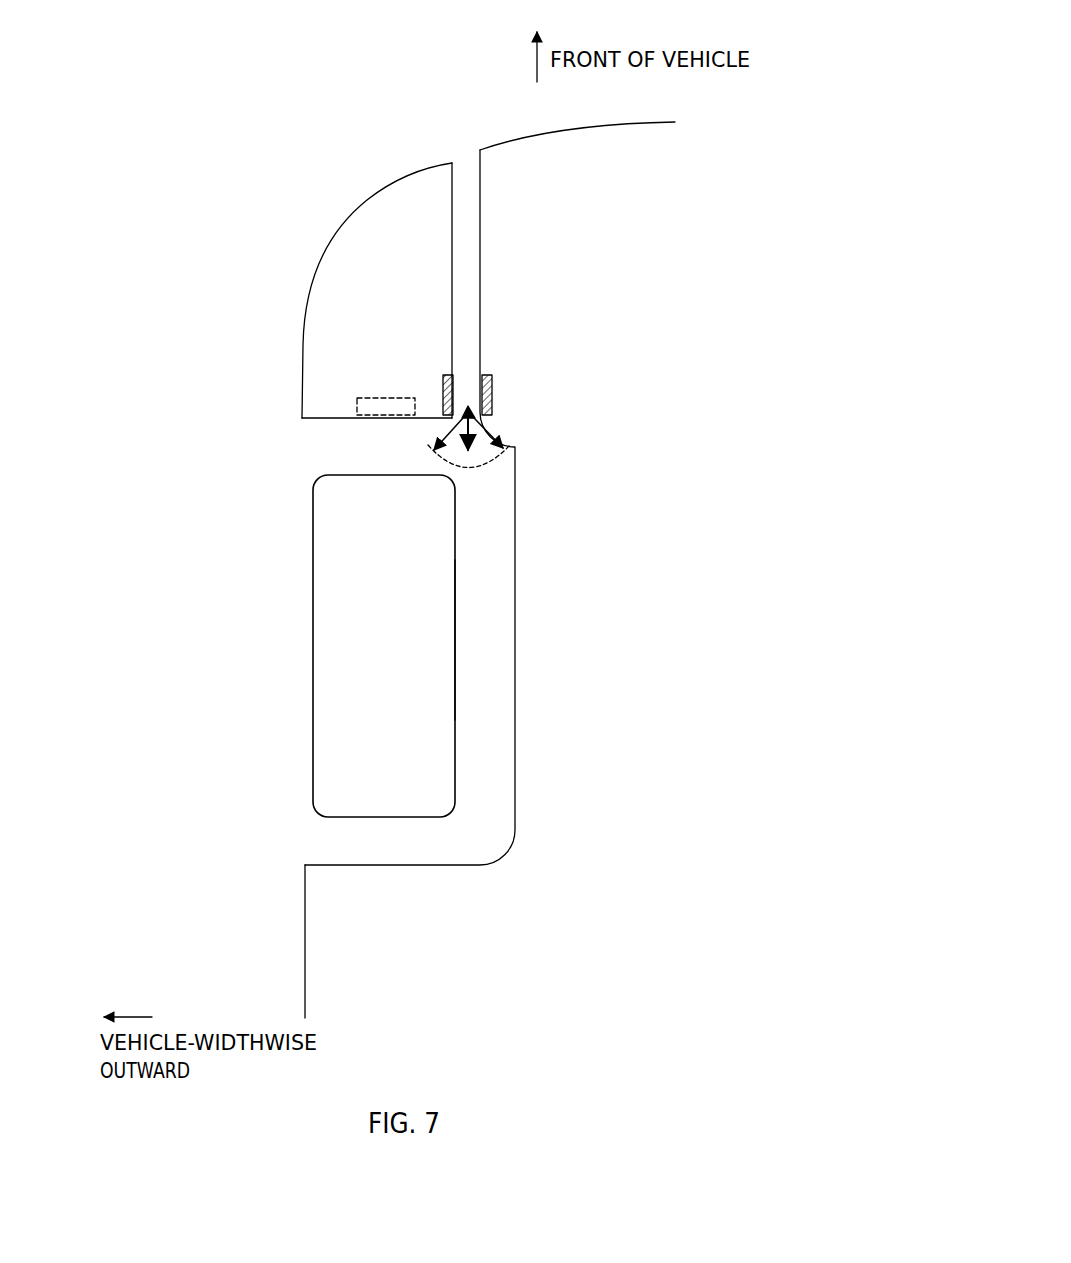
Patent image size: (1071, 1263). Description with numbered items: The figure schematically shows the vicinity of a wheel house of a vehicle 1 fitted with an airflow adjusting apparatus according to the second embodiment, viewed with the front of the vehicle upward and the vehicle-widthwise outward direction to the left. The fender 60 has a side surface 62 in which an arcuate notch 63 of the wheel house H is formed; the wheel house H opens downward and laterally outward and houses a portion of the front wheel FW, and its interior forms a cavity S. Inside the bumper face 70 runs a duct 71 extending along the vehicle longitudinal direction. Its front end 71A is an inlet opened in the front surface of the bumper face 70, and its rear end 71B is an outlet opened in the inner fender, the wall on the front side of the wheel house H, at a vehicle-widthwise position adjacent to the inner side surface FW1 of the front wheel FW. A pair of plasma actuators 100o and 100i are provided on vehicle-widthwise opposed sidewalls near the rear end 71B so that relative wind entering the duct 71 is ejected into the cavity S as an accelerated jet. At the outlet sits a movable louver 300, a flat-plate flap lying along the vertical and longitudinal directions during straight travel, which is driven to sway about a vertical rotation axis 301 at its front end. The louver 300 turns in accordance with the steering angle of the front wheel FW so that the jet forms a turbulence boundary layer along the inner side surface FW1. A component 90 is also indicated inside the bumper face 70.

The vehicle 1 is at (290, 145).
The bumper face 70 is at (327, 240).
The duct 71 is at (452, 320).
The front end 71A is at (461, 156).
The rear end 71B is at (440, 388).
The lamp unit 90 is at (357, 403).
The plasma actuator 100o is at (453, 378).
The plasma actuator 100i is at (489, 390).
The rotation axis 301 is at (475, 410).
The movable louver 300 is at (508, 443).
The front wheel FW is at (313, 536).
The inner side surface FW1 is at (455, 640).
The wheel house H is at (517, 577).
The cavity S is at (502, 816).
The arcuate notch 63 is at (298, 832).
The fender 60 is at (218, 941).
The side surface 62 is at (305, 914).